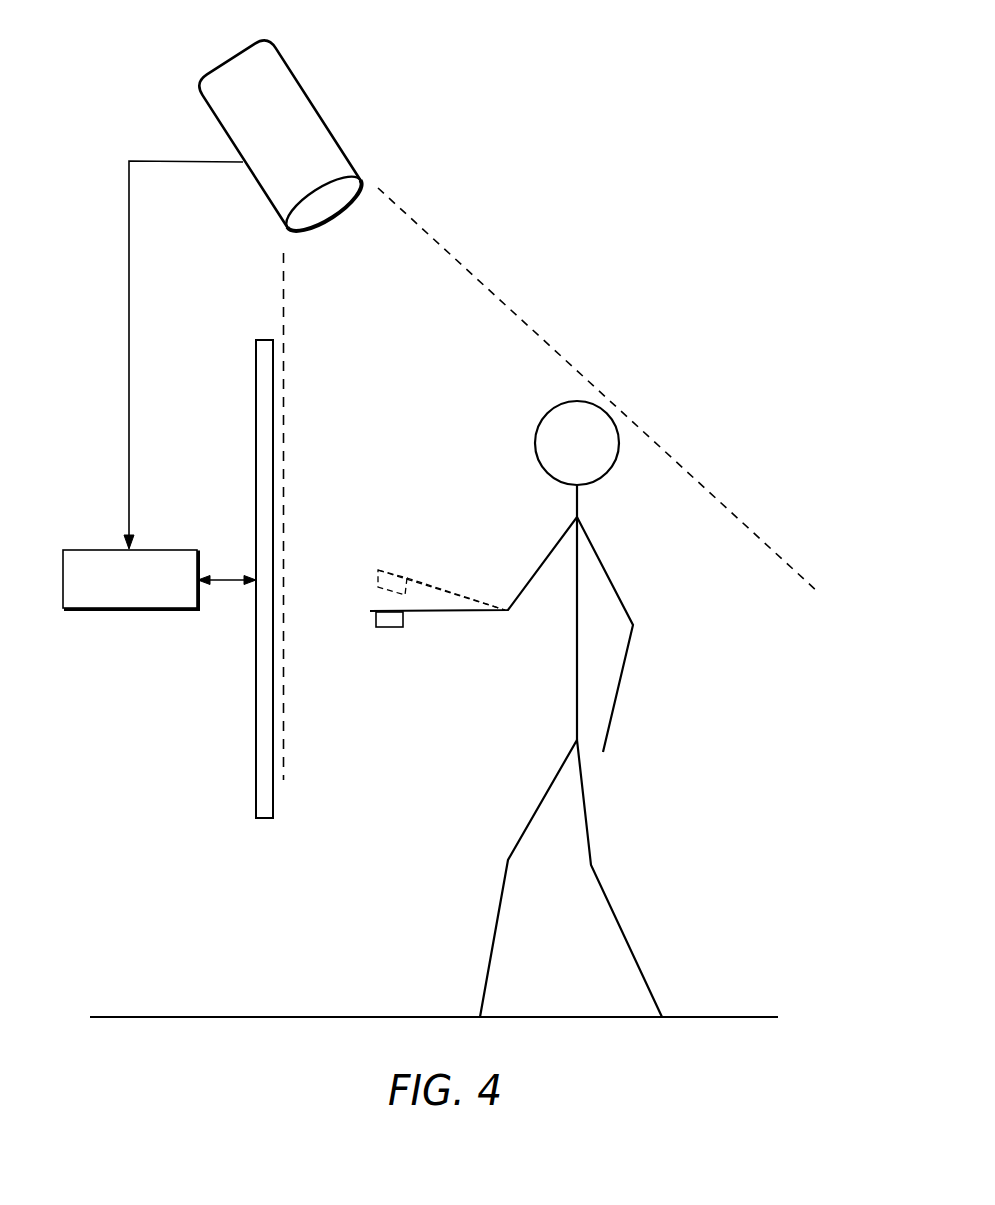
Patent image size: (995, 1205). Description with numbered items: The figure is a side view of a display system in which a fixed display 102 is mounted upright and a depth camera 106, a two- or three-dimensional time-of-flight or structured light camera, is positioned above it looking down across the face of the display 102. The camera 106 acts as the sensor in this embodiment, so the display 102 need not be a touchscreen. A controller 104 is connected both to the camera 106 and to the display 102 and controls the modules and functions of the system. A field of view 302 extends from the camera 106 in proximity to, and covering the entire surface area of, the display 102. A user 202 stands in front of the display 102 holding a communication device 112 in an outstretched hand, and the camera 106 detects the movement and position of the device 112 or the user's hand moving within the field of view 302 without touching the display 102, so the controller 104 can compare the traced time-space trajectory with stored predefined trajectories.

The display 102 is at (256, 397).
The controller 104 is at (182, 549).
The depth camera 106 is at (316, 107).
The communication device 112 is at (392, 627).
The user 202 is at (608, 568).
The field of view 302 is at (527, 323).